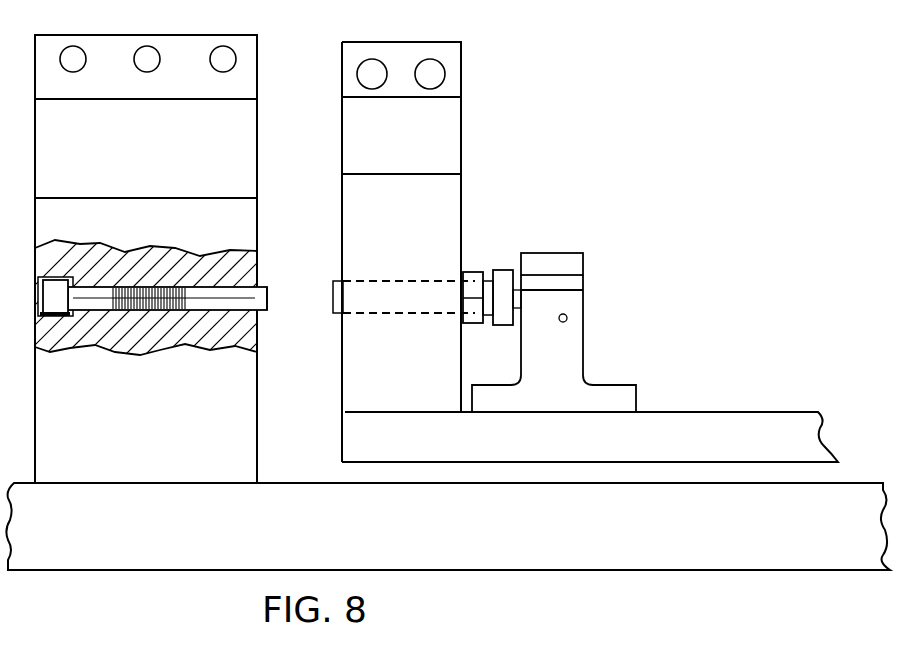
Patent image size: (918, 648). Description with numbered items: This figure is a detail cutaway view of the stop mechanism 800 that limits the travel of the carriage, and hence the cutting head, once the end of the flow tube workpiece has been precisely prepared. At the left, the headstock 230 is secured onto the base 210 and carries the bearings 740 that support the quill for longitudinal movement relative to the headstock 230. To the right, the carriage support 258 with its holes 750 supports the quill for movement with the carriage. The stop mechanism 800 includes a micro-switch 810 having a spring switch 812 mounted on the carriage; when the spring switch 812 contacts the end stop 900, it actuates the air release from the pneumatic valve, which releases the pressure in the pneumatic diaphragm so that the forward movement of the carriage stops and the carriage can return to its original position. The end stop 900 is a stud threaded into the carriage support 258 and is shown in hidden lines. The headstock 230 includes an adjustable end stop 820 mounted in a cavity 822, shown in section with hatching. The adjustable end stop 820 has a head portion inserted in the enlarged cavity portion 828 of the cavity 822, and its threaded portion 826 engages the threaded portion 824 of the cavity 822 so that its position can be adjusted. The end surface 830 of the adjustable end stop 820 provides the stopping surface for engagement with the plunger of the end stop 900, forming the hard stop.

The base 210 is at (722, 537).
The headstock 230 is at (184, 241).
The bearings 740 is at (218, 88).
The carriage support 258 is at (449, 231).
The mounting holes 750 is at (443, 95).
The stop mechanism 800 is at (564, 285).
The micro-switch 810 is at (583, 313).
The spring switch 812 is at (517, 277).
The adjustable end stop 820 is at (58, 297).
The cavity 822 is at (60, 316).
The threaded portion 824 is at (189, 292).
The threaded portion 826 is at (100, 298).
The enlarged cavity portion 828 is at (42, 276).
The end surface 830 is at (266, 292).
The end stop 900 is at (405, 298).